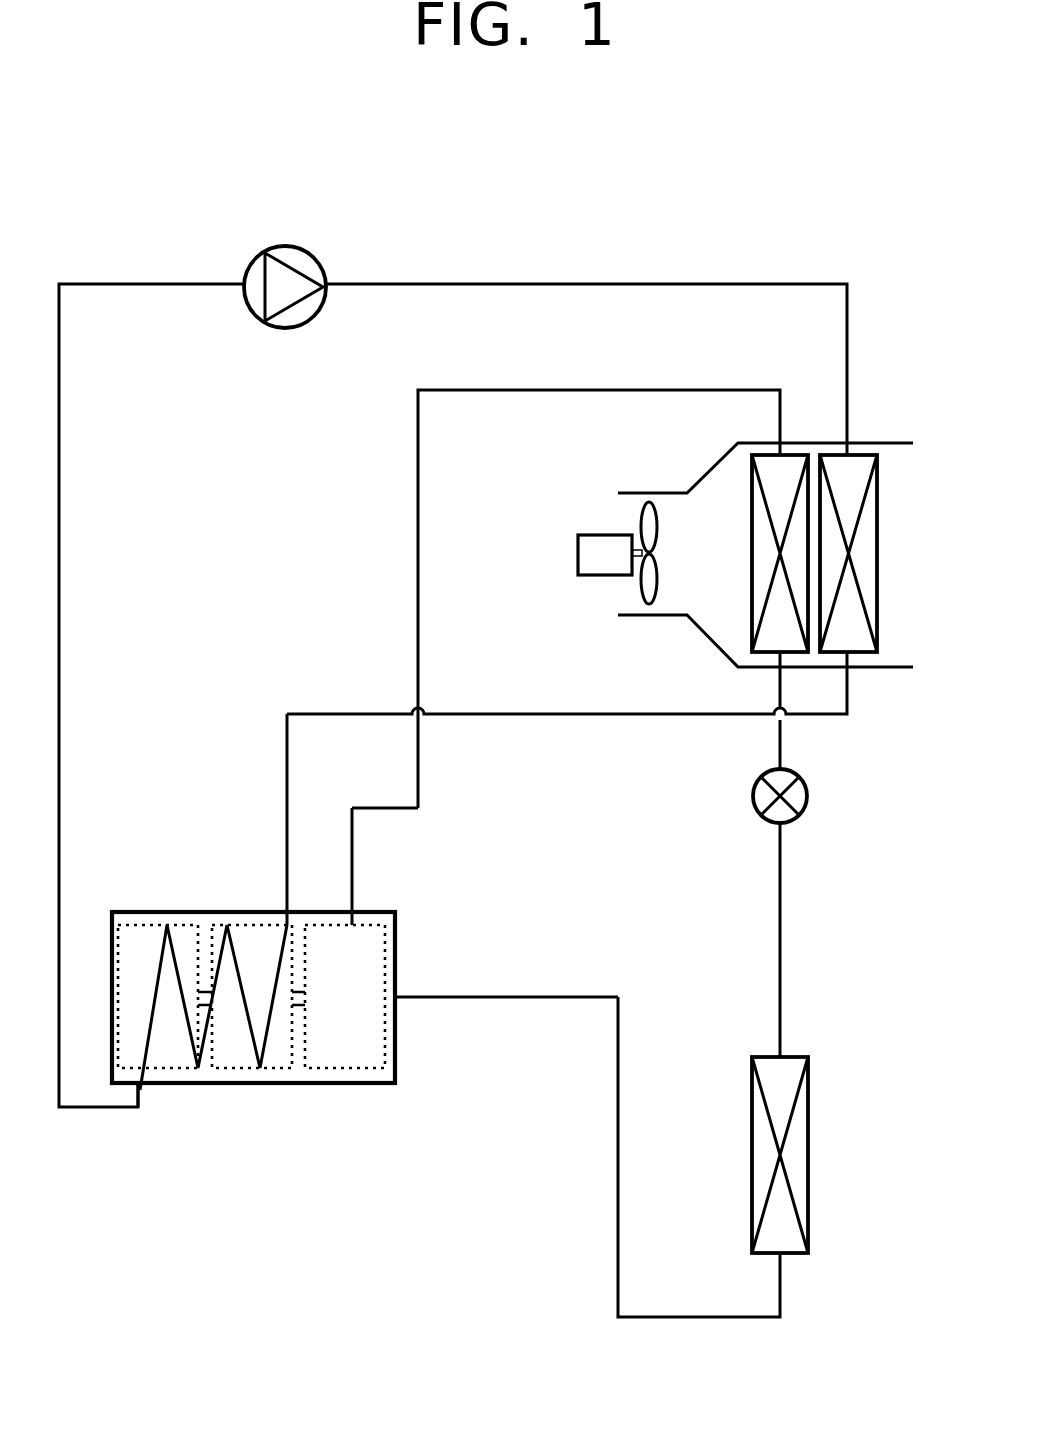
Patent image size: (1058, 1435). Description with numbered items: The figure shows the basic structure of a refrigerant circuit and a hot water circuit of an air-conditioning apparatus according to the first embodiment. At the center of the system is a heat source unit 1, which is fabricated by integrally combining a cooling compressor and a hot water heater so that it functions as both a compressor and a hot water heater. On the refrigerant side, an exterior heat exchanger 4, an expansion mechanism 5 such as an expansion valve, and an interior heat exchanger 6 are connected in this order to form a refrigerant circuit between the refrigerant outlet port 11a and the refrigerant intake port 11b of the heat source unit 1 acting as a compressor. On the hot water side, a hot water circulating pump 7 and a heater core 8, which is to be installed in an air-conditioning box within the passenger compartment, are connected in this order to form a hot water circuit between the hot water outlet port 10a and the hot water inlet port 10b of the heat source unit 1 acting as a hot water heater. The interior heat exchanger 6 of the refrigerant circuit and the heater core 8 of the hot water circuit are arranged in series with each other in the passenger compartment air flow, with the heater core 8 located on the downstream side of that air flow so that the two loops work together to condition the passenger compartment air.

The heat source unit 1 is at (152, 910).
The exterior heat exchanger 4 is at (808, 1120).
The expansion mechanism 5 is at (807, 797).
The interior heat exchanger 6 is at (752, 576).
The hot water circulating pump 7 is at (285, 252).
The heater core 8 is at (877, 574).
The hot water outlet port 10a is at (150, 1088).
The hot water inlet port 10b is at (275, 910).
The refrigerant outlet port 11a is at (401, 1000).
The refrigerant intake port 11b is at (340, 910).